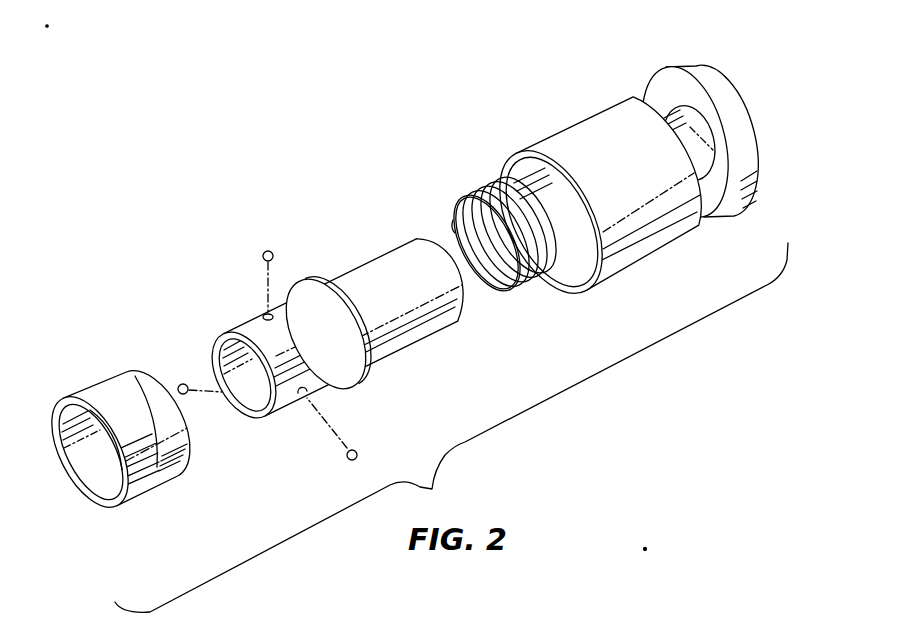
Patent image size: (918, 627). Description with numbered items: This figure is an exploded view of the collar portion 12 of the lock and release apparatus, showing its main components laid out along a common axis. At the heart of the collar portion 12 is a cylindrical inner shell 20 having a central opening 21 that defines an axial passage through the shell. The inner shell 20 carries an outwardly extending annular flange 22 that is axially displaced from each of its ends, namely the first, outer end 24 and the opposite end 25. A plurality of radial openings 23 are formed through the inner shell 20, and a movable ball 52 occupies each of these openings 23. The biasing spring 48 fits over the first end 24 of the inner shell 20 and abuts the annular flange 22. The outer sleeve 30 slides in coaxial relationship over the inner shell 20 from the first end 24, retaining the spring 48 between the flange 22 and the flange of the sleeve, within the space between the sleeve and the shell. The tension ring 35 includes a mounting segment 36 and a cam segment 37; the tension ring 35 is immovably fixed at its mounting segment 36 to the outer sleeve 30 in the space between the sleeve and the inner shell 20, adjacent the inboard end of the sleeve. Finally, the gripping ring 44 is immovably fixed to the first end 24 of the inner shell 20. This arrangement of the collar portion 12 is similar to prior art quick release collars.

The collar portion 12 is at (432, 489).
The inner shell 20 is at (317, 326).
The central opening 21 is at (252, 398).
The annular flange 22 is at (311, 280).
The radial openings 23 is at (264, 313).
The first end 24 is at (425, 237).
The second end 25 is at (214, 343).
The outer sleeve 30 is at (600, 122).
The tension ring 35 is at (120, 425).
The mounting segment 36 is at (141, 493).
The cam segment 37 is at (182, 465).
The gripping ring 44 is at (693, 73).
The biasing spring 48 is at (484, 195).
The movable ball 52 is at (181, 384).